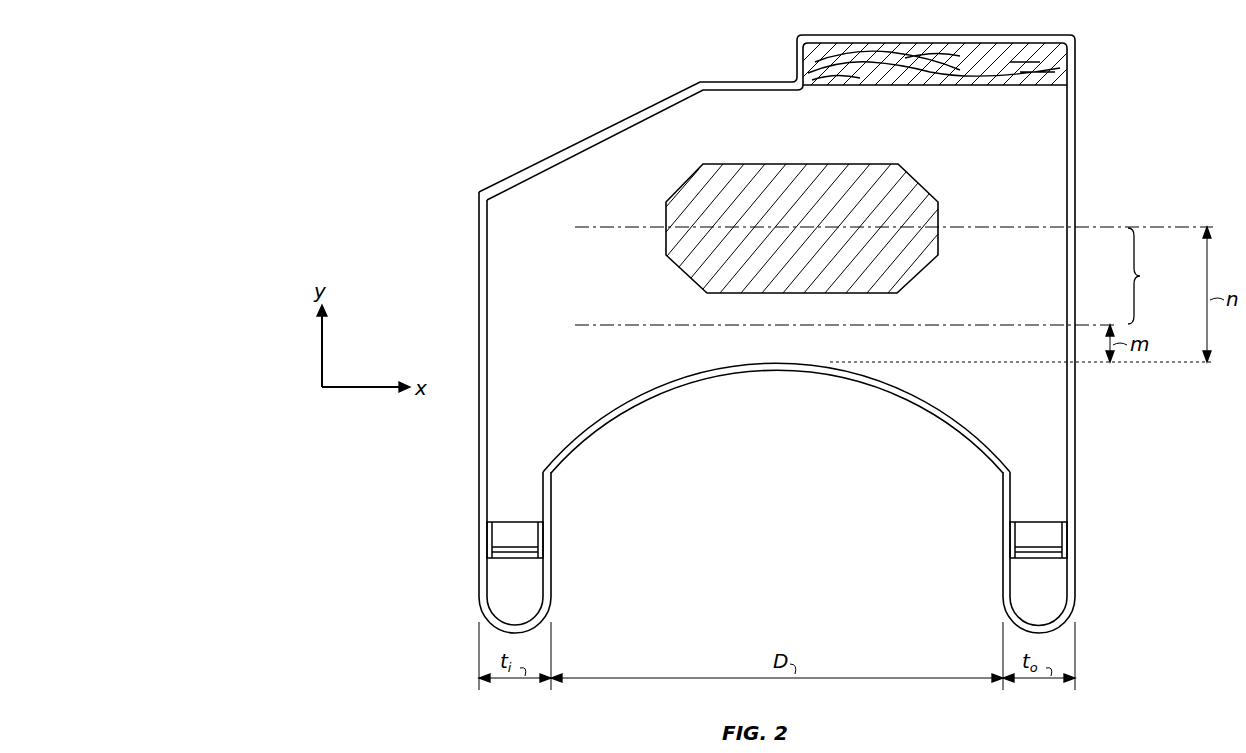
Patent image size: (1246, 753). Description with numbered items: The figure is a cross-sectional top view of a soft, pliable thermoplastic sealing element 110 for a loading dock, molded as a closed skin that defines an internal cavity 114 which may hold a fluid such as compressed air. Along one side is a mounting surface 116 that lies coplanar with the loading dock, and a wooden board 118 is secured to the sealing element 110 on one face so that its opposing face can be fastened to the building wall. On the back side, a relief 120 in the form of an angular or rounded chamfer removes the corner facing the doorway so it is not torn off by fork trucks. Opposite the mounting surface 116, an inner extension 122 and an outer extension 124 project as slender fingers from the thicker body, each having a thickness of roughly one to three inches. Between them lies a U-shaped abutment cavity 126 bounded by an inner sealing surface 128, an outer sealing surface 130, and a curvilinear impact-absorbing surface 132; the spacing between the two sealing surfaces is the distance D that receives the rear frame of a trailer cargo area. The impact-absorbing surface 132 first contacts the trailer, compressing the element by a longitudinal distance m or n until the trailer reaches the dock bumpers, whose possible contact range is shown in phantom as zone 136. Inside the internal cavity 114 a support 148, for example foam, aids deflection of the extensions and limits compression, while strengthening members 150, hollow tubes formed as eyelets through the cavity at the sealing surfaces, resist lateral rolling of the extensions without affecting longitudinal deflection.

The sealing element 110 is at (368, 114).
The internal cavity 114 is at (1012, 172).
The mounting surface 116 is at (907, 34).
The wooden board 118 is at (1056, 62).
The relief 120 is at (601, 128).
The inner extension 122 is at (514, 592).
The outer extension 124 is at (1040, 592).
The abutment cavity 126 is at (776, 467).
The inner sealing surface 128 is at (552, 590).
The outer sealing surface 130 is at (1003, 586).
The impact-absorbing surface 132 is at (777, 372).
The zone 136 is at (1154, 276).
The support 148 is at (806, 163).
The strengthening member 150 is at (510, 522).